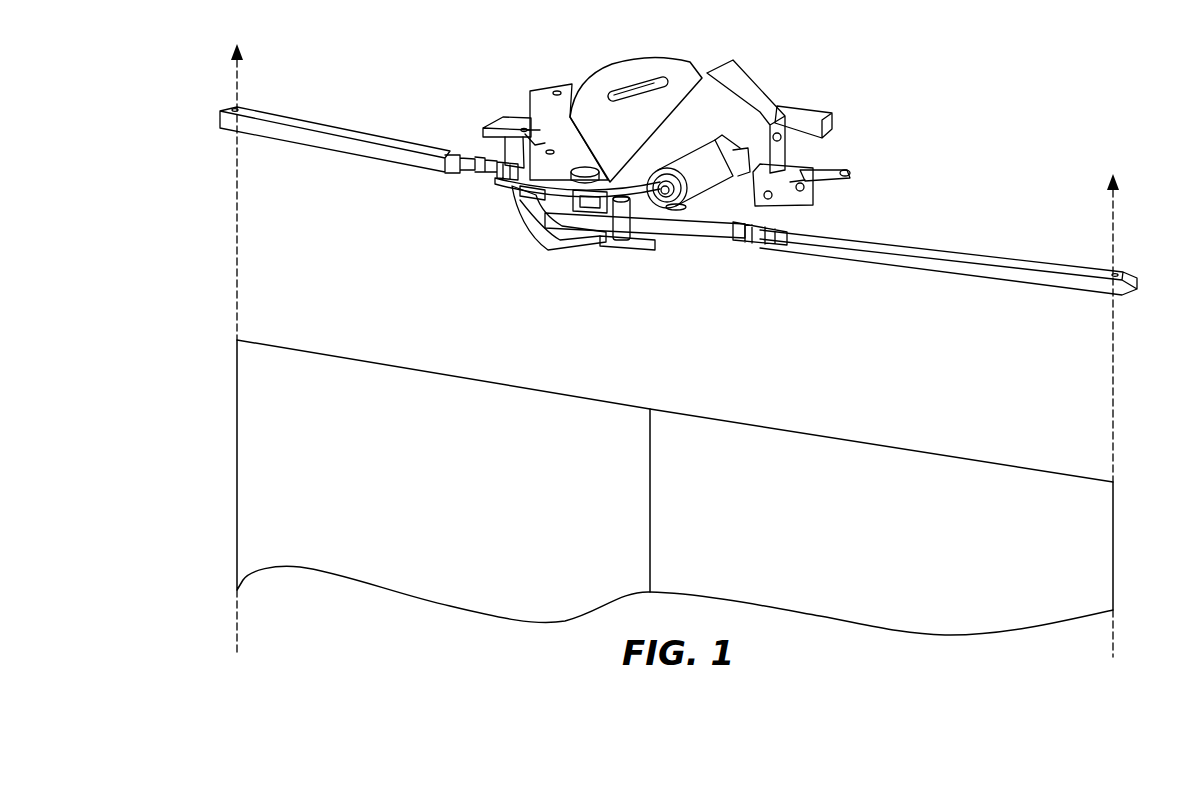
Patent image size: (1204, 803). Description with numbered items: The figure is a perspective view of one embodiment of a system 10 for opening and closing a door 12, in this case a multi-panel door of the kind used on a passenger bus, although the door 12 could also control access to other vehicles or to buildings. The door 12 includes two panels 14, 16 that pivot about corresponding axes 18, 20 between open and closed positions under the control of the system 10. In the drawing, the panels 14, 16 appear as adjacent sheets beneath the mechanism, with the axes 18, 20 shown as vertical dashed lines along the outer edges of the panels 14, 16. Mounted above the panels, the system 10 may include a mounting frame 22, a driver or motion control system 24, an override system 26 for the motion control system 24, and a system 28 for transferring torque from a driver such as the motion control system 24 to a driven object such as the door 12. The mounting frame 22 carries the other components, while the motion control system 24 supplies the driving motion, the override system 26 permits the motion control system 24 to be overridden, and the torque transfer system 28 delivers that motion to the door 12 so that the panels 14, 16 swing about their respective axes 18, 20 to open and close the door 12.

The system for opening and closing a door 10 is at (446, 78).
The door 12 is at (445, 388).
The panel 14 is at (421, 498).
The panel 16 is at (841, 536).
The axis 18 is at (237, 200).
The axis 20 is at (1113, 358).
The mounting frame 22 is at (496, 102).
The motion control system 24 is at (716, 196).
The override system 26 is at (782, 84).
The torque transfer system 28 is at (518, 228).